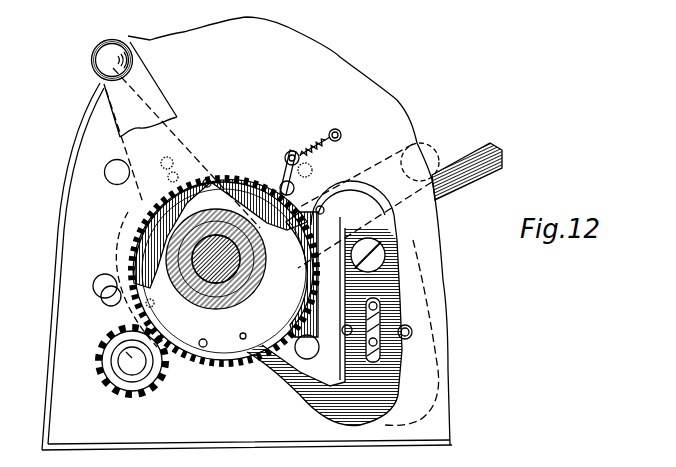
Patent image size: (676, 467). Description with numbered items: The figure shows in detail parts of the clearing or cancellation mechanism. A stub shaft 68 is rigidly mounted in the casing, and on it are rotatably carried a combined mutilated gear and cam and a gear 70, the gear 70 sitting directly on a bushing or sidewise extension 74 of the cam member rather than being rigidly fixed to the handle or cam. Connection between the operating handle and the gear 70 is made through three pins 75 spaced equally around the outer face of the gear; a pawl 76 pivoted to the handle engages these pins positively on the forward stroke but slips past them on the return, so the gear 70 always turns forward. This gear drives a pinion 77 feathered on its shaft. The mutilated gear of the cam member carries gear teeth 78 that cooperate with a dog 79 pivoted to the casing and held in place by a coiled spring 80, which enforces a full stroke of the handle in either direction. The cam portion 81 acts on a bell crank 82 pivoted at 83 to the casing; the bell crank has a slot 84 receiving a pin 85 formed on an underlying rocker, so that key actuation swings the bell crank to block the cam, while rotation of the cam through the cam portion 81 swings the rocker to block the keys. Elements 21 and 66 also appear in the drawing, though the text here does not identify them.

The roller 21 is at (150, 70).
The pin 66 is at (244, 332).
The stub shaft 68 is at (250, 265).
The gear 70 is at (204, 302).
The bushing or sidewise extension 74 is at (188, 304).
The pins 75 is at (152, 304).
The pawl 76 is at (178, 166).
The pinion 77 is at (132, 397).
The gear teeth 78 is at (258, 178).
The dog 79 is at (334, 164).
The coiled spring 80 is at (322, 141).
The cam portion 81 is at (358, 238).
The bell crank 82 is at (333, 207).
The pivot 83 is at (399, 262).
The slot 84 is at (360, 370).
The pin 85 is at (383, 348).